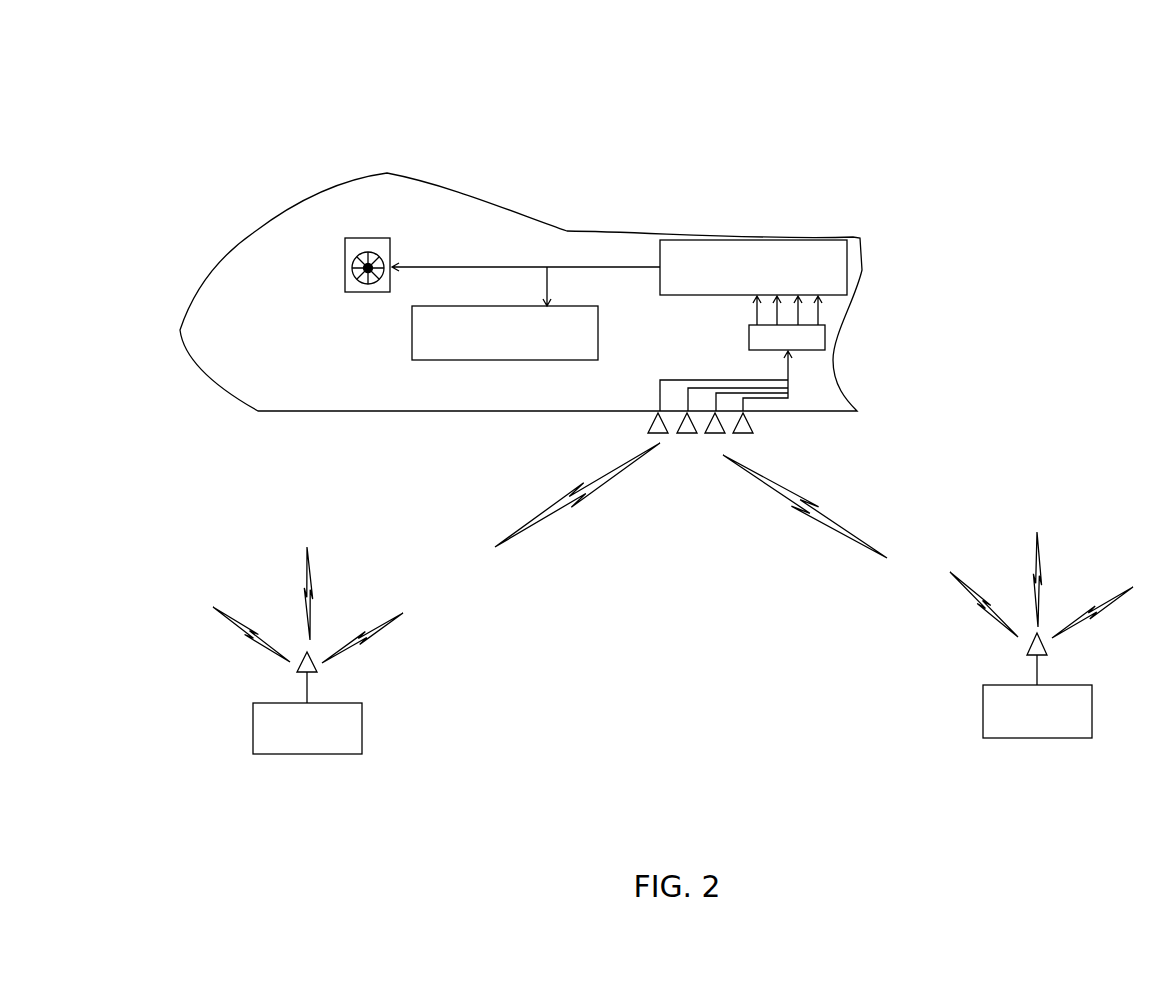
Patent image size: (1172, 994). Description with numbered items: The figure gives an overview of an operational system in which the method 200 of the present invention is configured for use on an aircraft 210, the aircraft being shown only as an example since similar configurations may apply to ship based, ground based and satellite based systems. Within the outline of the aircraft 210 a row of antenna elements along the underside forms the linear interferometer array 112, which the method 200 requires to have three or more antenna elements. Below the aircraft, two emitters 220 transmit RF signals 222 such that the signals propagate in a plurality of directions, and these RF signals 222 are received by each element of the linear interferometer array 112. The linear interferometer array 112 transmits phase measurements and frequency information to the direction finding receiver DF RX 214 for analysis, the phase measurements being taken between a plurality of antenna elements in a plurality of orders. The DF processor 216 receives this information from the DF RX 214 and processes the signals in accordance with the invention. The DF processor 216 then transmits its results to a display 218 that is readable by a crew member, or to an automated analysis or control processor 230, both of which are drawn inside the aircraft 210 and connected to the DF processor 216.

The method 200 is at (210, 174).
The aircraft 210 is at (367, 175).
The DF processor 216 is at (772, 240).
The direction finding receiver DF RX 214 is at (830, 333).
The display 218 is at (345, 285).
The automated analysis or control processor 230 is at (433, 360).
The linear interferometer array 112 is at (648, 433).
The RF signals 222 is at (787, 500).
The emitter 220 is at (362, 725).